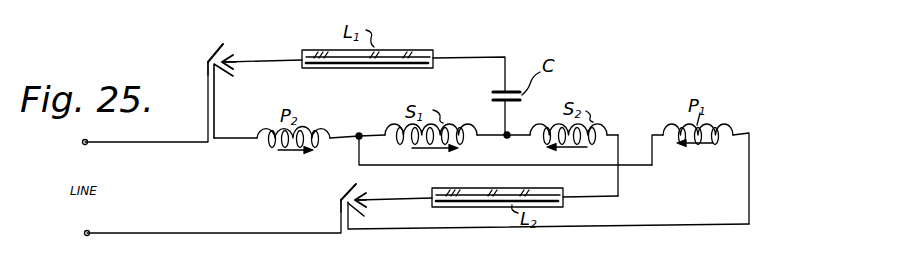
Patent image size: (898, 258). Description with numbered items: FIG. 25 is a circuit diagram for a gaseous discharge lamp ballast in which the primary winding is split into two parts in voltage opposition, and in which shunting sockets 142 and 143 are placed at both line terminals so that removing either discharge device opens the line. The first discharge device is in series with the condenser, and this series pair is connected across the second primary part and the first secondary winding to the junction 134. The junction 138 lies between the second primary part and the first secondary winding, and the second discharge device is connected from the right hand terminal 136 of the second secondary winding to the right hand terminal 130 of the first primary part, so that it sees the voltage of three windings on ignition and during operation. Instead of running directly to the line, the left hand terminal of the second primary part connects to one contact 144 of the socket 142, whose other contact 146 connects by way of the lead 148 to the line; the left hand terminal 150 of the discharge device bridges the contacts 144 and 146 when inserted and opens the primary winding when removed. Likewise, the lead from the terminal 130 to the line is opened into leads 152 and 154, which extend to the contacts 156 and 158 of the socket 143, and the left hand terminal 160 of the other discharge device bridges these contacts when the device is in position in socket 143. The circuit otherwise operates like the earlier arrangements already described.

The right hand terminal of primary part P1 130 is at (751, 188).
The junction 134 is at (505, 133).
The right hand terminal of winding S2 136 is at (619, 182).
The junction between windings P2 and S1 138 is at (358, 130).
The shunting socket 142 is at (213, 44).
The shunting socket 143 is at (341, 189).
The socket contact 144 is at (218, 71).
The socket contact 146 is at (205, 56).
The lead 148 is at (206, 122).
The left hand terminal of gaseous discharge device 150 is at (227, 56).
The lead 152 is at (348, 227).
The lead 154 is at (339, 217).
The socket contact 156 is at (338, 195).
The socket contact 158 is at (353, 208).
The left hand terminal of discharge device 160 is at (362, 196).